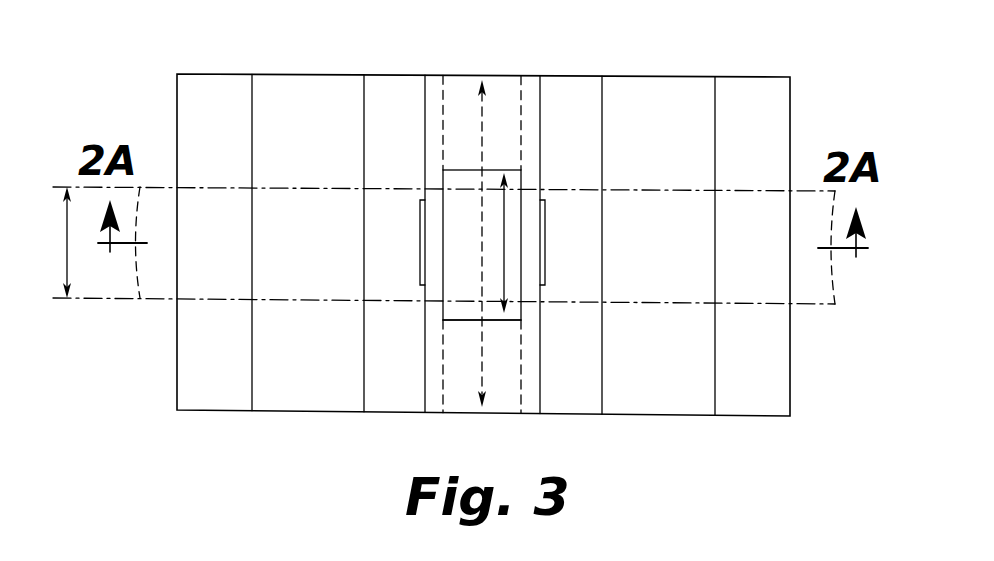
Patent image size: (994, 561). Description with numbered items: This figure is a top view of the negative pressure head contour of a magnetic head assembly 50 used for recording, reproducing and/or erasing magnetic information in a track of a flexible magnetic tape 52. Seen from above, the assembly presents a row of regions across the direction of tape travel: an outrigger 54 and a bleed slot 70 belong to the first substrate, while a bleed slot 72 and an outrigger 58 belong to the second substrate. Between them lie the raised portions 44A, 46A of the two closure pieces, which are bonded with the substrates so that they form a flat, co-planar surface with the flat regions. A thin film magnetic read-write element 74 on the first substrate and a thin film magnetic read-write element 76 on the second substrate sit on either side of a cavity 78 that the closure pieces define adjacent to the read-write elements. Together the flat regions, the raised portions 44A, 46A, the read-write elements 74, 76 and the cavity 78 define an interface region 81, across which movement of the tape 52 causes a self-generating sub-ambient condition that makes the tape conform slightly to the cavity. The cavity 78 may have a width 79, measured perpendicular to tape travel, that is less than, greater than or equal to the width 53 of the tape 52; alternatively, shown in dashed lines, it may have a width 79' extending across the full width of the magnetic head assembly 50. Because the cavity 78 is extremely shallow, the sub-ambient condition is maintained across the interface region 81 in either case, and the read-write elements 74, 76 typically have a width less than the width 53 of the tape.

The magnetic head assembly 50 is at (680, 50).
The flexible magnetic tape 52 is at (150, 302).
The width of the tape 53 is at (67, 242).
The outrigger 54 is at (222, 136).
The outrigger 58 is at (765, 136).
The bleed slot 70 is at (323, 136).
The bleed slot 72 is at (672, 136).
The thin film magnetic read-write element 74 is at (420, 212).
The thin film magnetic read-write element 76 is at (545, 212).
The cavity 78 is at (452, 312).
The width of the cavity 79 is at (544, 243).
The alternative cavity width 79' is at (467, 213).
The interface region 81 is at (461, 323).
The raised portion of closure piece 44A is at (433, 405).
The raised portion of closure piece 46A is at (530, 405).